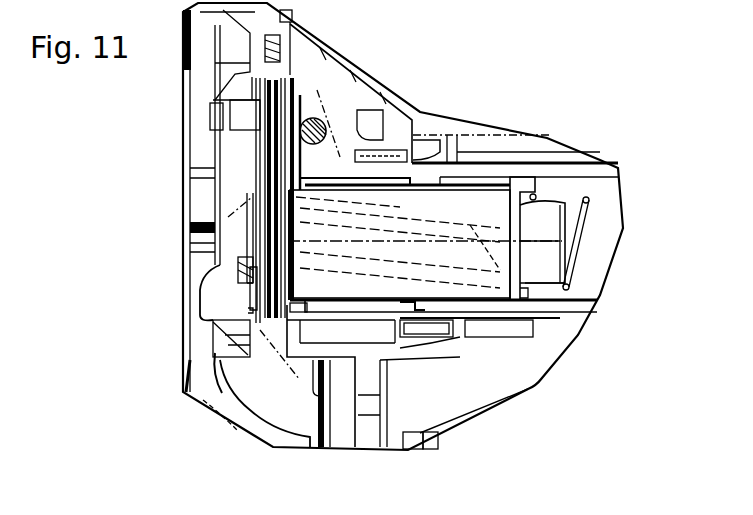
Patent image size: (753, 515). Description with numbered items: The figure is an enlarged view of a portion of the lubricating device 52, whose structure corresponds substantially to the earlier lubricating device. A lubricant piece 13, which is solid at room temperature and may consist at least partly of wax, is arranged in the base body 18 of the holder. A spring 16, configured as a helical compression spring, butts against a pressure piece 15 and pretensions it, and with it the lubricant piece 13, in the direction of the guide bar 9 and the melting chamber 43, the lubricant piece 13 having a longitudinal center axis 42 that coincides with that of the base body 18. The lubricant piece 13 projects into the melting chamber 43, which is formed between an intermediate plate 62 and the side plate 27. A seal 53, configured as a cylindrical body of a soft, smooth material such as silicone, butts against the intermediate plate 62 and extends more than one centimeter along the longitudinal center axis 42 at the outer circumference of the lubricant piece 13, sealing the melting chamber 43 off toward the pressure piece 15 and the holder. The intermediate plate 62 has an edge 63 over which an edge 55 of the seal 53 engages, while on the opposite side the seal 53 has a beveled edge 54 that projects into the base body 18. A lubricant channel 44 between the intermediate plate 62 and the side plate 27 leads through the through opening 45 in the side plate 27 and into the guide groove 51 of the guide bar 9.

The guide bar 9 is at (292, 240).
The lubricant piece 13 is at (463, 210).
The pressure piece 15 is at (517, 208).
The spring 16 is at (582, 218).
The base body 18 is at (552, 305).
The side plate 27 is at (292, 297).
The longitudinal center axis 42 is at (478, 233).
The melting chamber 43 is at (293, 180).
The lubricant channel 44 is at (290, 146).
The through opening 45 is at (288, 92).
The guide groove 51 is at (197, 115).
The lubricating device 52 is at (358, 174).
The seal 53 is at (357, 302).
The edge 54 is at (413, 300).
The edge 55 is at (307, 302).
The intermediate plate 62 is at (296, 100).
The edge 63 is at (302, 178).